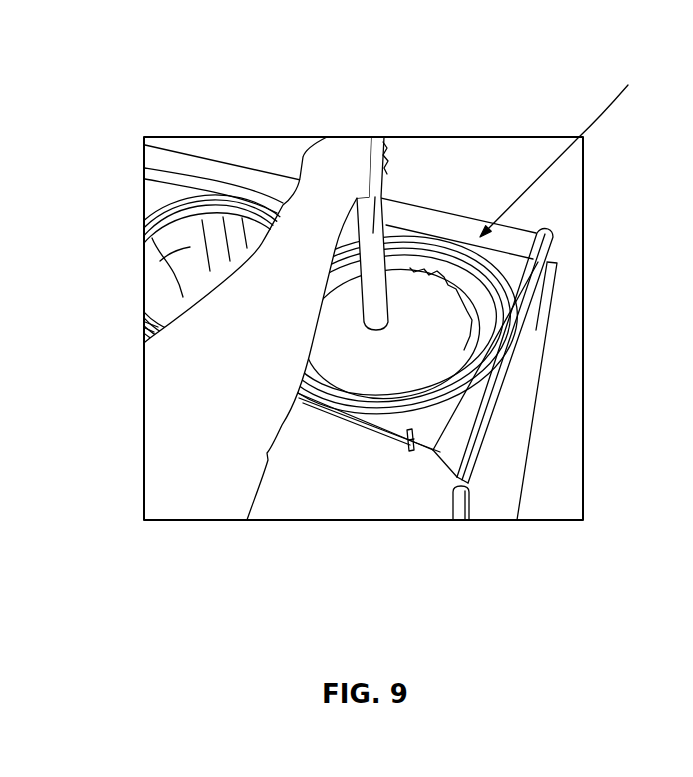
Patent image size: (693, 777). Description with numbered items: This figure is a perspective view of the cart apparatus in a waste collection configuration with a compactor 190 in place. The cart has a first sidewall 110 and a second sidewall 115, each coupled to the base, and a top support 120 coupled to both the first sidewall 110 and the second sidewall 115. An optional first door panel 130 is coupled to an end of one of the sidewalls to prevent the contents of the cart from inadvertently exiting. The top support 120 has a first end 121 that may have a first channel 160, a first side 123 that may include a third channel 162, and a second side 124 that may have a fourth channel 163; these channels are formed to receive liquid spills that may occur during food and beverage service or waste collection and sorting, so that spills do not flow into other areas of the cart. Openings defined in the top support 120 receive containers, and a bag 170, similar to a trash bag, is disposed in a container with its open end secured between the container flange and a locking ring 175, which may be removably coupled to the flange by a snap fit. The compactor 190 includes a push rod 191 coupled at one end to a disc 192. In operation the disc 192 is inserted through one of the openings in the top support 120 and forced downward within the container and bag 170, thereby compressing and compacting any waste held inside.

The first sidewall 110 is at (322, 447).
The second sidewall 115 is at (237, 168).
The top support 120 is at (440, 418).
The first end of the top support 121 is at (548, 356).
The first side of the top support 123 is at (409, 453).
The second side of the top support 124 is at (173, 180).
The first door panel 130 is at (500, 487).
The first channel 160 is at (530, 305).
The third channel 162 is at (380, 512).
The fourth channel 163 is at (339, 162).
The bag 170 is at (473, 243).
The locking ring 175 is at (310, 155).
The compactor 190 is at (579, 152).
The push rod 191 is at (437, 263).
The disc 192 is at (447, 332).